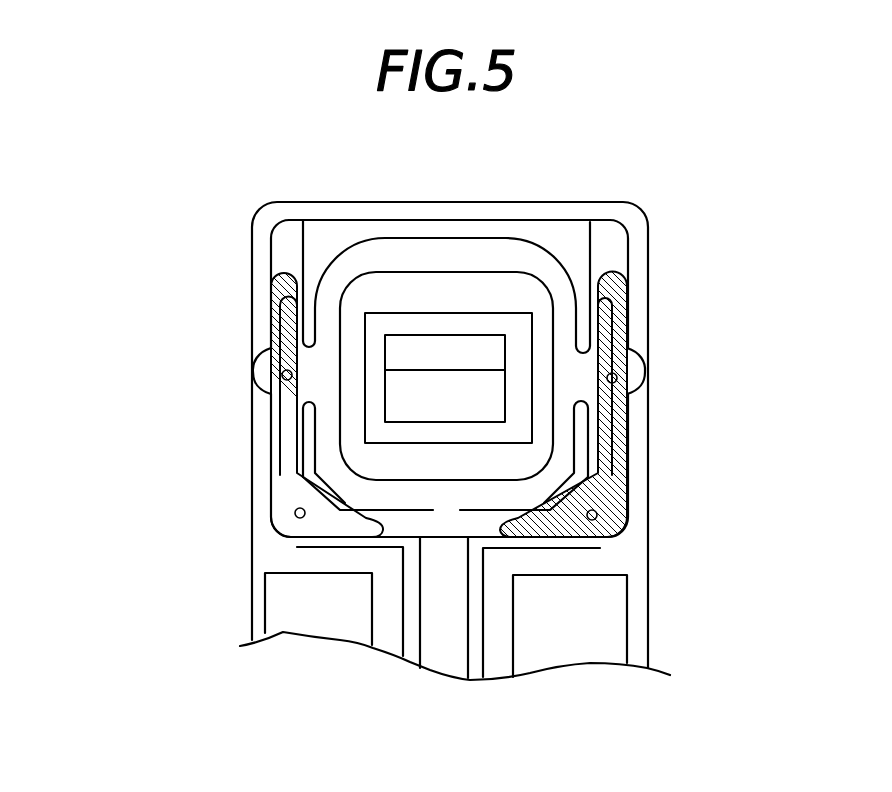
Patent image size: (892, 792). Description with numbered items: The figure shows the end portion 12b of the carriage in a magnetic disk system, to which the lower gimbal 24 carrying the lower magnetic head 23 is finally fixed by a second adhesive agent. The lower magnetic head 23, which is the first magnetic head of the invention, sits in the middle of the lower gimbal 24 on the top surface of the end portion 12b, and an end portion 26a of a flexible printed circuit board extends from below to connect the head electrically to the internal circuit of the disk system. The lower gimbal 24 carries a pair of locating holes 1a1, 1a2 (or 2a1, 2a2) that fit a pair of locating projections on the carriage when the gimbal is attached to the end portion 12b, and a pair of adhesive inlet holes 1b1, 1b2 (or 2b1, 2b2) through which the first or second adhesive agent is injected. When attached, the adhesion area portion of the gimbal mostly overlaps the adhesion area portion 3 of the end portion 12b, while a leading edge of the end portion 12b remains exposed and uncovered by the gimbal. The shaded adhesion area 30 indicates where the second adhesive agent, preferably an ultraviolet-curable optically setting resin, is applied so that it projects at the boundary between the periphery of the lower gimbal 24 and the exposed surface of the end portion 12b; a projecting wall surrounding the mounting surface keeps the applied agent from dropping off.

The adhesion area portion 3 is at (288, 232).
The end portion of the carriage 12b is at (440, 205).
The lower magnetic head 23 is at (463, 382).
The lower gimbal 24 is at (517, 255).
The adhesion area 30 is at (274, 488).
The locating hole 1a1 is at (188, 377).
The locating hole 2a1 is at (287, 375).
The locating hole 1a2 is at (703, 381).
The locating hole 2a2 is at (612, 378).
The adhesive inlet hole 1b1 is at (195, 562).
The adhesive inlet hole 2b1 is at (298, 528).
The adhesive inlet hole 1b2 is at (693, 561).
The adhesive inlet hole 2b2 is at (597, 525).
The end portion of the flexible printed circuit board 26a is at (447, 657).